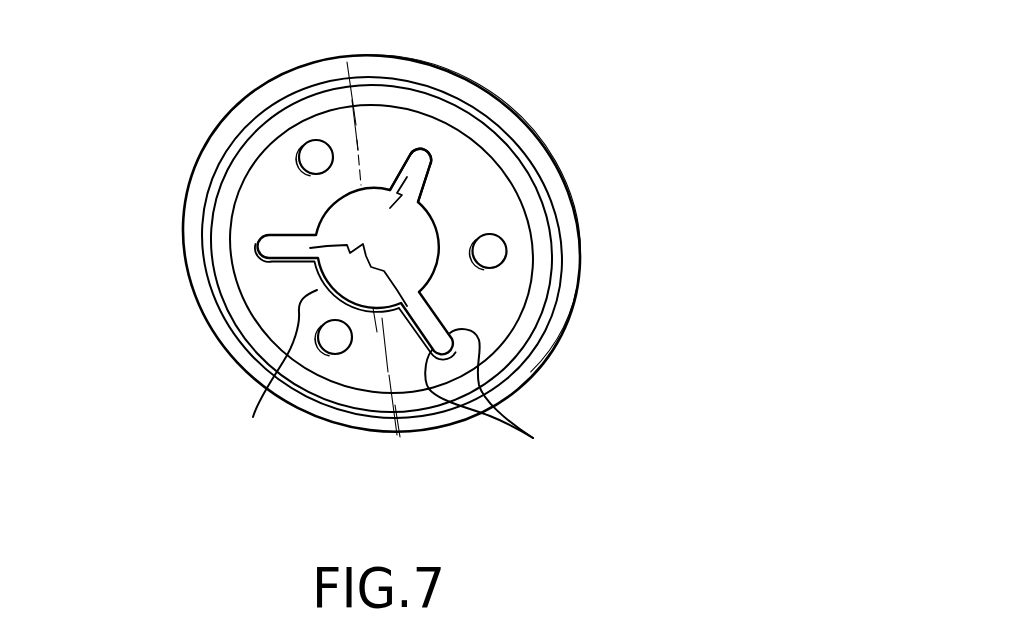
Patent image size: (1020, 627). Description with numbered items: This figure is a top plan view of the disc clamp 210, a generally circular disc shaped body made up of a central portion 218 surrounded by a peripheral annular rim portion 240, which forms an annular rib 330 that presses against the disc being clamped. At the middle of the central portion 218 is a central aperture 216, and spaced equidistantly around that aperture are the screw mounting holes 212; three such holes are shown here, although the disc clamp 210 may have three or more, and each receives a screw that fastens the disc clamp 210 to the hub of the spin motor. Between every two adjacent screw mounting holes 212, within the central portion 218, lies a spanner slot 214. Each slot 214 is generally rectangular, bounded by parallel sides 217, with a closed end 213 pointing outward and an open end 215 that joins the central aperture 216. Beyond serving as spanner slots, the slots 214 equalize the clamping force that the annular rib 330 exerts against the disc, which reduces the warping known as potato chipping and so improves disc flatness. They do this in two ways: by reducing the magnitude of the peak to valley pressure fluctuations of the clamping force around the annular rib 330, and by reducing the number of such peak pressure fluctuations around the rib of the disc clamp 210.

The disc clamp 210 is at (706, 120).
The screw mounting holes 212 is at (304, 144).
The closed end 213 is at (424, 150).
The spanner slots 214 is at (440, 185).
The open end 215 is at (355, 252).
The central aperture 216 is at (347, 273).
The parallel sides 217 is at (534, 438).
The central portion 218 is at (238, 219).
The peripheral annular rim portion 240 is at (547, 353).
The annular rib 330 is at (568, 273).